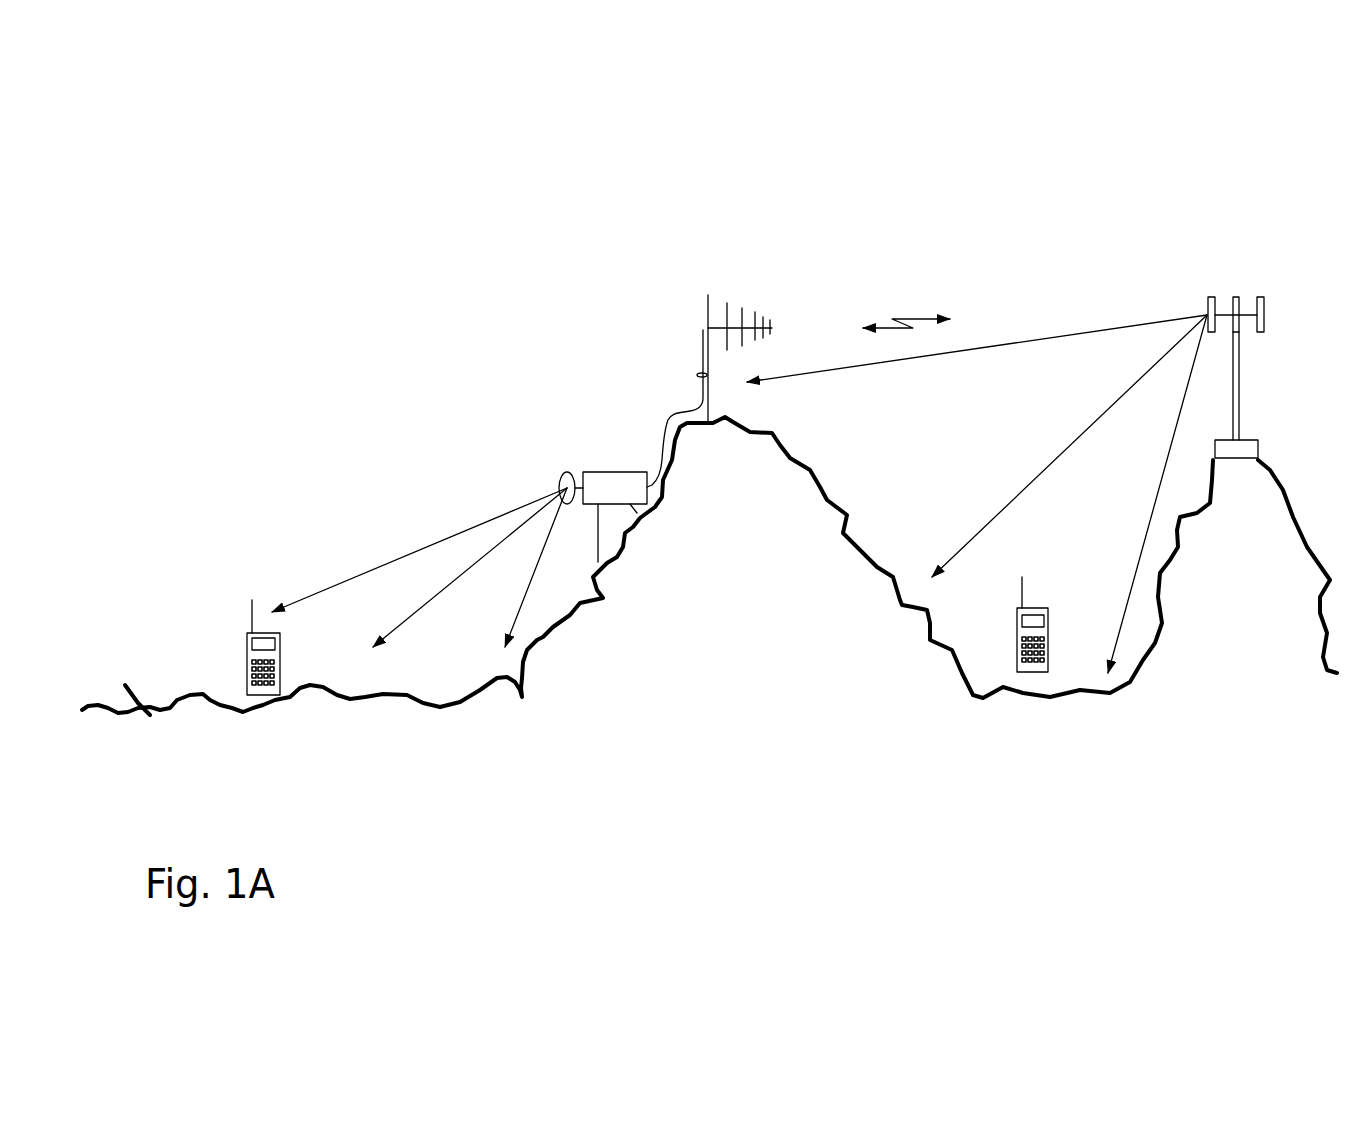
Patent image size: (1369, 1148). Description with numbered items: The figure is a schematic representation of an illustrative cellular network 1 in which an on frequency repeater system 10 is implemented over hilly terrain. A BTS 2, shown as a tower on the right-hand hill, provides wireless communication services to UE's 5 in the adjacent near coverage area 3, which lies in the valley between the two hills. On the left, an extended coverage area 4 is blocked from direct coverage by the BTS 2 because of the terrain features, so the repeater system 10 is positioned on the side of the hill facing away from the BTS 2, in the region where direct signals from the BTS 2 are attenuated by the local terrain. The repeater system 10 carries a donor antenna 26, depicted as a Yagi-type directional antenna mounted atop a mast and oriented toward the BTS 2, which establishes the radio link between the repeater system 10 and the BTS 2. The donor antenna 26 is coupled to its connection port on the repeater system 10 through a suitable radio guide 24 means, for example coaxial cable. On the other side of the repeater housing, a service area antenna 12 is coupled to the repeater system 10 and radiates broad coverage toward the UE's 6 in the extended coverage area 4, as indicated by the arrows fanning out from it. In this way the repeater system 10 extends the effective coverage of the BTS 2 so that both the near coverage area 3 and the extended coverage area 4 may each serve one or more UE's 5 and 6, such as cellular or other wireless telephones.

The cellular network 1 is at (725, 198).
The BTS 2 is at (1235, 282).
The near coverage area 3 is at (906, 562).
The extended coverage area 4 is at (327, 653).
The UE 5 is at (1050, 607).
The UE 6 is at (240, 628).
The repeater system 10 is at (620, 470).
The service area antenna 12 is at (565, 472).
The radio guide 24 is at (697, 375).
The donor antenna 26 is at (758, 310).